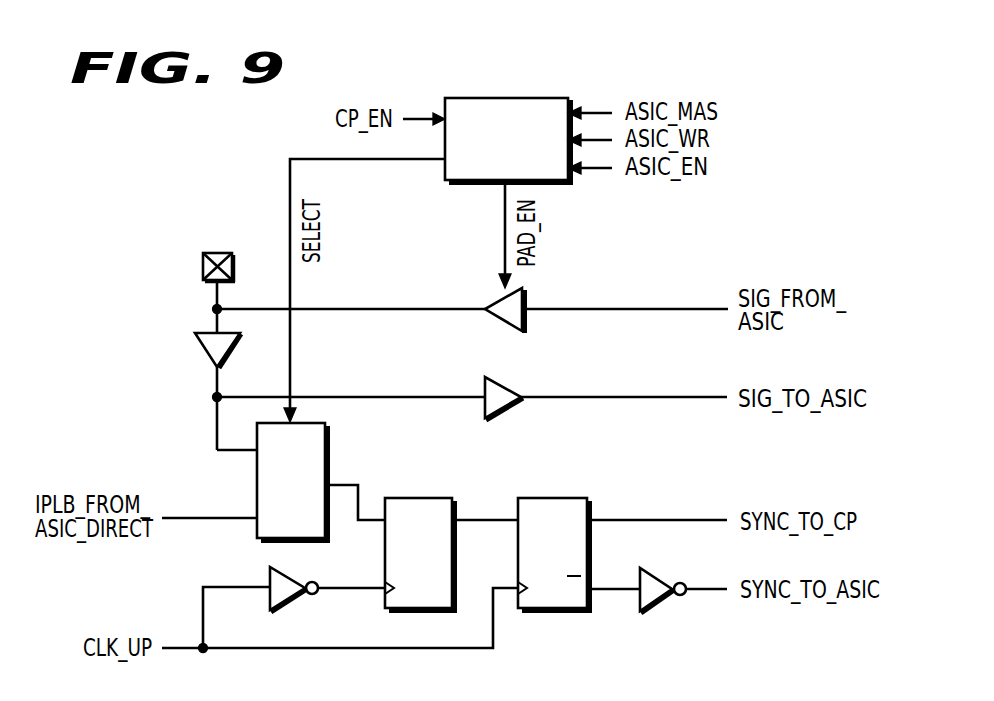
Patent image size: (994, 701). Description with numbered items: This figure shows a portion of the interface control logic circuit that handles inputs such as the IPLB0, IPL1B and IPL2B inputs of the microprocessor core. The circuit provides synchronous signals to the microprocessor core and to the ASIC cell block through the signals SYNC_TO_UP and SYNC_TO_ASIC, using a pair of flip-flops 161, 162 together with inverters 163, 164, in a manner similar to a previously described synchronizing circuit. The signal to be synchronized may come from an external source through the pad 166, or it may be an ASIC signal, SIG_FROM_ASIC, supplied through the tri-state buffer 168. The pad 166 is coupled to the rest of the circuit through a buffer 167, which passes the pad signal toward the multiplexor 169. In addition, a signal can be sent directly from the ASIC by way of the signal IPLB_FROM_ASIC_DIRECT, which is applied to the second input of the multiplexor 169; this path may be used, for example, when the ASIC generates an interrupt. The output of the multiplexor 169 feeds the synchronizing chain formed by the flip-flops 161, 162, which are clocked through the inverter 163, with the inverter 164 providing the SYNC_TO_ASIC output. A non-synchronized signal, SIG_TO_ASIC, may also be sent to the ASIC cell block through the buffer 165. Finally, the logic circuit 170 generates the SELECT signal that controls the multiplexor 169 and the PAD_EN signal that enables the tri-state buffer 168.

The flip-flop 161 is at (431, 496).
The flip-flop 162 is at (565, 496).
The inverter 163 is at (292, 600).
The inverter 164 is at (660, 602).
The buffer 165 is at (500, 410).
The pad 166 is at (203, 262).
The input buffer 167 is at (208, 354).
The tri-state buffer 168 is at (497, 323).
The multiplexor 169 is at (327, 452).
The logic circuit 170 is at (468, 184).